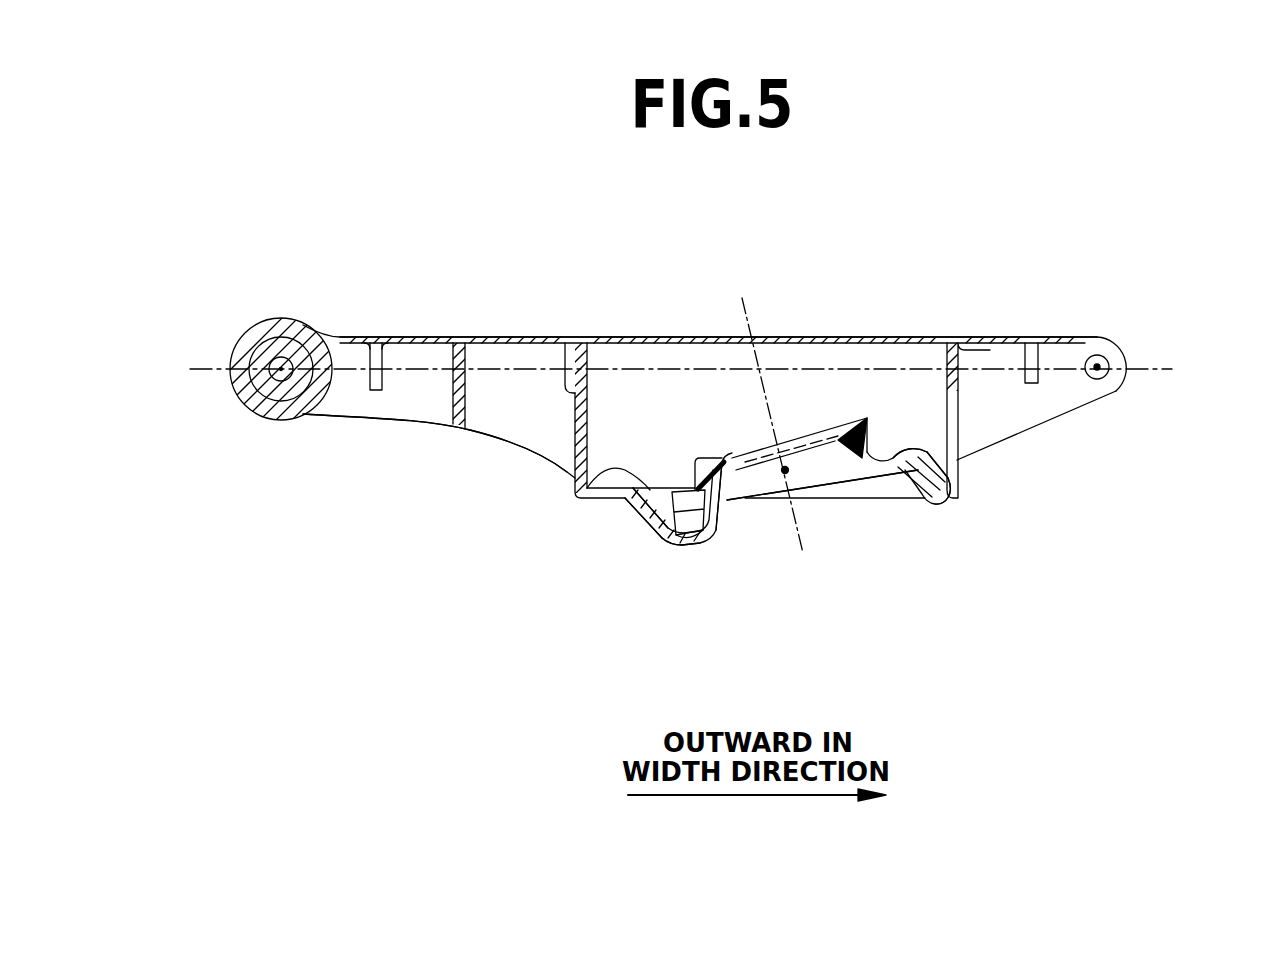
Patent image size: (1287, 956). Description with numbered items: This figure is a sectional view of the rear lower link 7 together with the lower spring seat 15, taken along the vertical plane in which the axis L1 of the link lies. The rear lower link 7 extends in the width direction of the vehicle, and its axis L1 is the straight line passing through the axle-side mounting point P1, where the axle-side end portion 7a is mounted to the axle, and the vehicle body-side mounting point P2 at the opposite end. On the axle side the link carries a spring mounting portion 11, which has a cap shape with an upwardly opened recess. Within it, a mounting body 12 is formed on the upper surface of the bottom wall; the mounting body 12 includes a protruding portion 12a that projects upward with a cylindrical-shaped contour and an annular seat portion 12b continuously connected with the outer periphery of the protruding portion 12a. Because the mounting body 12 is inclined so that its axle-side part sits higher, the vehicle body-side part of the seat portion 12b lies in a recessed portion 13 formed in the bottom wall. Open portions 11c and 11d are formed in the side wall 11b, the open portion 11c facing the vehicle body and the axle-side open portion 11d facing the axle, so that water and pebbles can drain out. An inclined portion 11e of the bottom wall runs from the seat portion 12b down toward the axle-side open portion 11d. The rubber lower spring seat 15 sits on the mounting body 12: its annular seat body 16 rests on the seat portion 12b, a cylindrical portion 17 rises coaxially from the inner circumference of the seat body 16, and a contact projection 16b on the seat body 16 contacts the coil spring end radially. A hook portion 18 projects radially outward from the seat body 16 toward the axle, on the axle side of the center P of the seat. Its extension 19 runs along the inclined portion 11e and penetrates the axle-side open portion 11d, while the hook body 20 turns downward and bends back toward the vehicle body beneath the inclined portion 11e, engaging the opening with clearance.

The rear lower link 7 is at (581, 320).
The axle-side end portion 7a is at (281, 350).
The spring mounting portion 11 is at (650, 392).
The side wall 11b is at (852, 387).
The open portion 11c is at (573, 423).
The axle-side open portion 11d is at (958, 410).
The inclined portion 11e is at (917, 500).
The mounting body 12 is at (880, 588).
The protruding portion 12a is at (753, 517).
The seat portion 12b is at (720, 537).
The recessed portion 13 is at (582, 481).
The lower spring seat 15 is at (617, 660).
The seat body 16 is at (686, 545).
The contact projection 16b is at (650, 510).
The cylindrical portion 17 is at (660, 545).
The hook portion 18 is at (1085, 473).
The extension 19 is at (933, 470).
The hook body 20 is at (950, 498).
The axis L1 is at (500, 366).
The center P is at (785, 470).
The axle-side mounting point P1 is at (1106, 358).
The vehicle body-side mounting point P2 is at (282, 382).